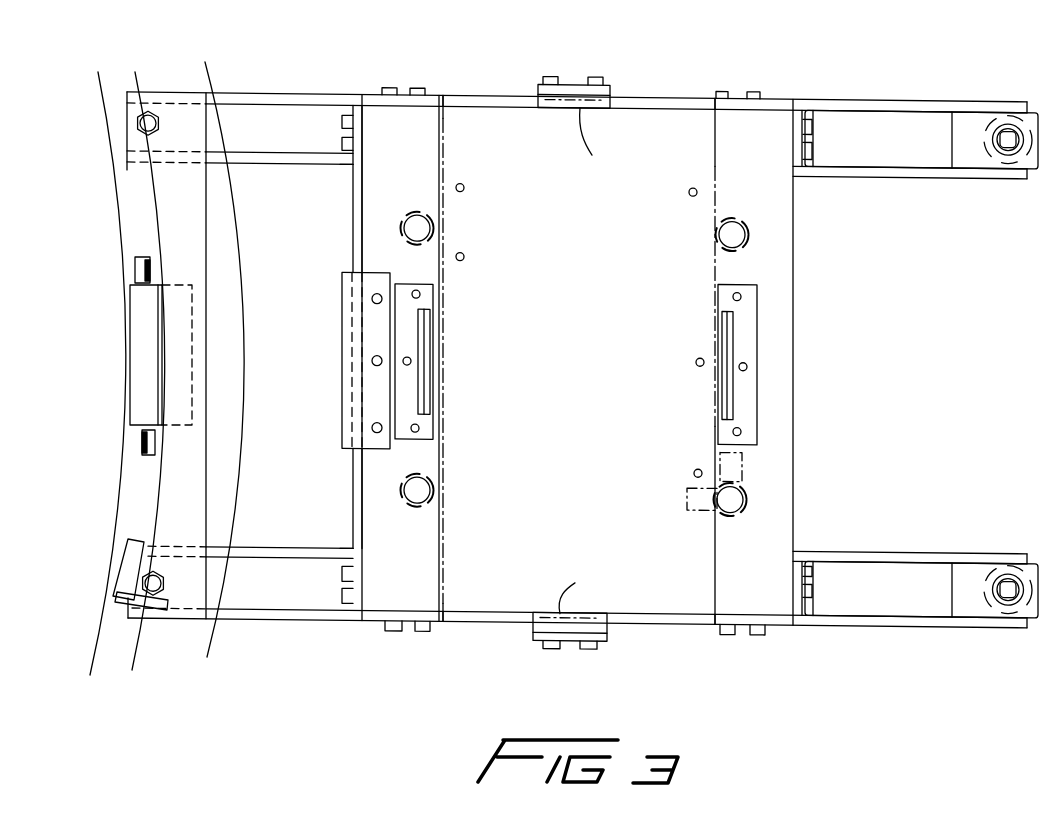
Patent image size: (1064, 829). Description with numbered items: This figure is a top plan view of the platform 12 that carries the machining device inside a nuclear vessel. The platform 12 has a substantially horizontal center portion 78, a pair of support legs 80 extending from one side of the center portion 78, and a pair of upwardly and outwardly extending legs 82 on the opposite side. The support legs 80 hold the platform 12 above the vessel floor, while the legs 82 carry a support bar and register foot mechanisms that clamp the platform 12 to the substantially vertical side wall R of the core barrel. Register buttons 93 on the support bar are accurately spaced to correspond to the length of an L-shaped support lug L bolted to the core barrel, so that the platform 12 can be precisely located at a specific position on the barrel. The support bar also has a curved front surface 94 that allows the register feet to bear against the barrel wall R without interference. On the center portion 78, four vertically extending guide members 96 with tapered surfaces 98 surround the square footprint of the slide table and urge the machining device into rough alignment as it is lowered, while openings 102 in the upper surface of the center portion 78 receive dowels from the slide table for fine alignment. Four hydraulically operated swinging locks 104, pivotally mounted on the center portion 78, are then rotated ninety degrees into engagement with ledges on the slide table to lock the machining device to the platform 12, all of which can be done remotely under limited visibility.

The platform 12 is at (636, 90).
The horizontal center portion 78 is at (595, 403).
The support legs 80 is at (895, 157).
The upwardly and outwardly extending legs 82 is at (297, 145).
The register buttons 93 is at (135, 266).
The curved front surface 94 is at (135, 508).
The guide members 96 is at (563, 76).
The tapered surfaces 98 is at (675, 430).
The openings 102 is at (466, 254).
The swinging locks 104 is at (737, 471).
The L-shaped support lug L is at (147, 360).
The core barrel side wall R is at (125, 643).